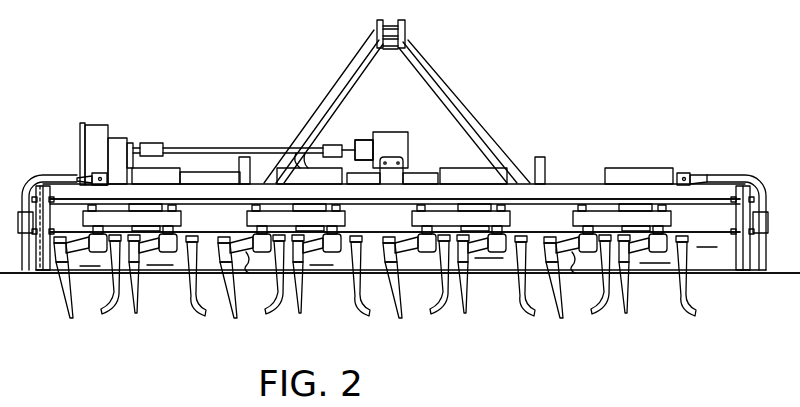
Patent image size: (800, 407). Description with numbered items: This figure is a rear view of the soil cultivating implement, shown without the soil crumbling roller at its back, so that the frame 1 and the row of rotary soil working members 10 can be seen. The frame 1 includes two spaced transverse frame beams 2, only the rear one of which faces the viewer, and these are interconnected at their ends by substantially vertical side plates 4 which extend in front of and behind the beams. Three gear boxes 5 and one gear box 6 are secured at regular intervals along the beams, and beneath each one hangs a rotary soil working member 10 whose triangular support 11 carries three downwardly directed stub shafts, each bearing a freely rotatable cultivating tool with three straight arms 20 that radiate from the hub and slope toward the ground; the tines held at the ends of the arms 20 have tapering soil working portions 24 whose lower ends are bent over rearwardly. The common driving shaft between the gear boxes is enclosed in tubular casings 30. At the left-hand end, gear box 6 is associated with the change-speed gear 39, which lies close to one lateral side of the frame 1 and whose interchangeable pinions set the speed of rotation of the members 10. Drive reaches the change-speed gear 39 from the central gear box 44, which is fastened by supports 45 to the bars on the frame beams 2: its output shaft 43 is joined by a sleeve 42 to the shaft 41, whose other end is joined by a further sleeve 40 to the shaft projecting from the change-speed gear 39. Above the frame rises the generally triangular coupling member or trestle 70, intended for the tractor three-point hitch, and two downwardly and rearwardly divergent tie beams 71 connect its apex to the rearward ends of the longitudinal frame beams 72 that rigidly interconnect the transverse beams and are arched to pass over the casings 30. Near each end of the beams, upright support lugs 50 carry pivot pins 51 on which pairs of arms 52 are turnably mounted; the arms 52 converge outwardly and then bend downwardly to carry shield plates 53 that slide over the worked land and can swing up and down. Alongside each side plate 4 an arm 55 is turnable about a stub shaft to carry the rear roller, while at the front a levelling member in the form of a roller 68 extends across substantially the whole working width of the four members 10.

The frame 1 is at (623, 180).
The frame beam 2 is at (568, 193).
The side plate 4 is at (43, 212).
The gear box 5 is at (487, 177).
The gear box 6 is at (152, 180).
The rotary soil working member 10 is at (121, 314).
The support 11 is at (243, 217).
The arm 20 is at (242, 262).
The soil working portion 24 is at (197, 315).
The tubular casing 30 is at (207, 178).
The change-speed gear 39 is at (93, 120).
The sleeve 40 is at (149, 143).
The shaft 41 is at (200, 147).
The sleeve 42 is at (333, 142).
The output shaft 43 is at (372, 138).
The central gear box 44 is at (413, 119).
The support 45 is at (395, 183).
The support lug 50 is at (97, 173).
The pivot pin 51 is at (698, 175).
The arm 52 is at (33, 175).
The shield plate 53 is at (27, 274).
The arm 55 is at (47, 275).
The roller 68 is at (372, 268).
The coupling member or trestle 70 is at (417, 70).
The tie beam 71 is at (337, 85).
The frame beam 72 is at (245, 157).